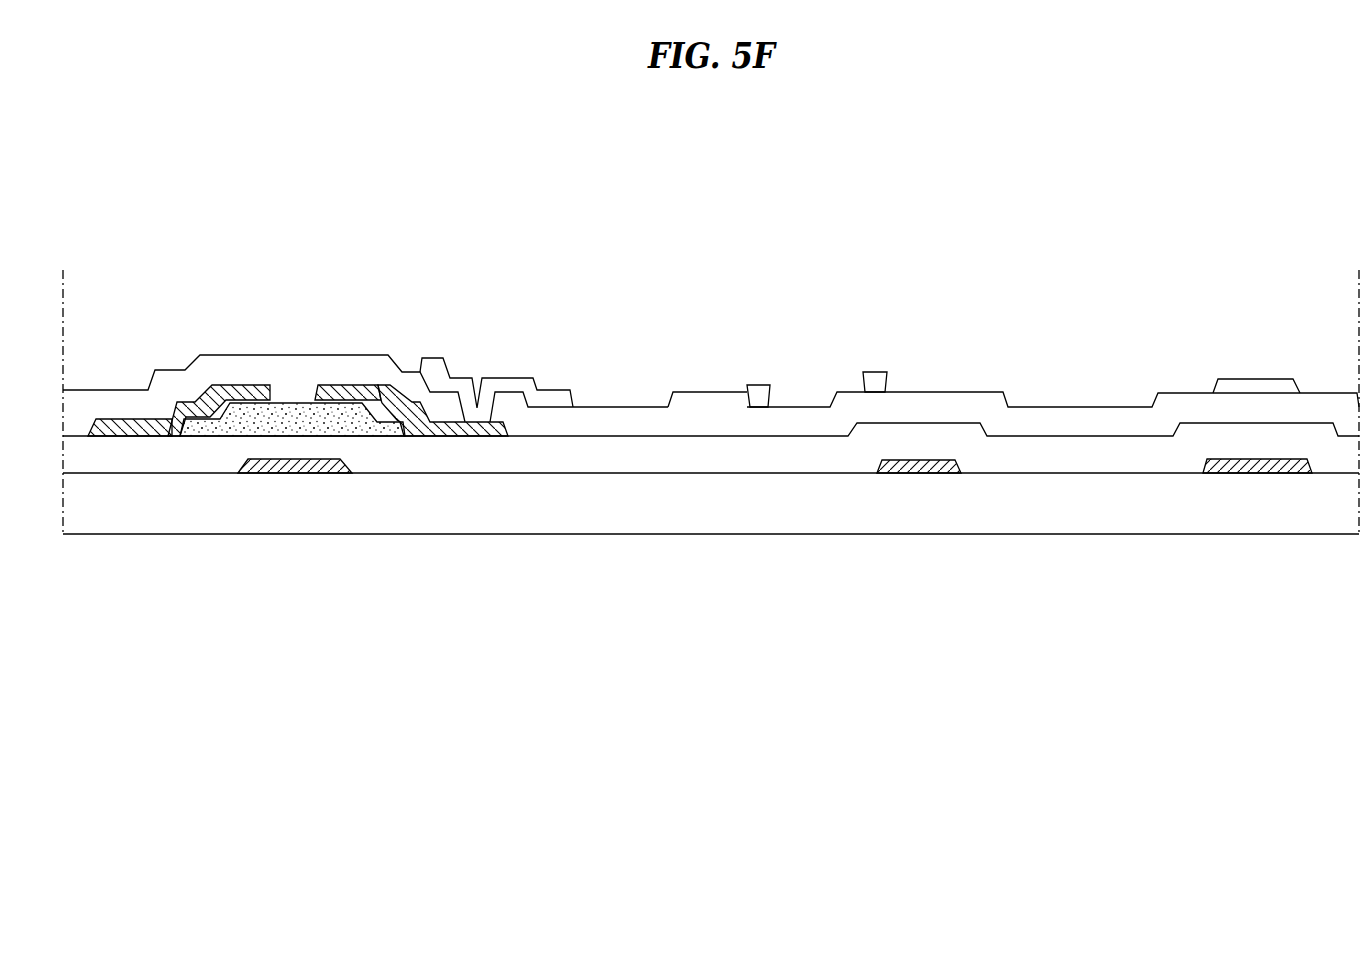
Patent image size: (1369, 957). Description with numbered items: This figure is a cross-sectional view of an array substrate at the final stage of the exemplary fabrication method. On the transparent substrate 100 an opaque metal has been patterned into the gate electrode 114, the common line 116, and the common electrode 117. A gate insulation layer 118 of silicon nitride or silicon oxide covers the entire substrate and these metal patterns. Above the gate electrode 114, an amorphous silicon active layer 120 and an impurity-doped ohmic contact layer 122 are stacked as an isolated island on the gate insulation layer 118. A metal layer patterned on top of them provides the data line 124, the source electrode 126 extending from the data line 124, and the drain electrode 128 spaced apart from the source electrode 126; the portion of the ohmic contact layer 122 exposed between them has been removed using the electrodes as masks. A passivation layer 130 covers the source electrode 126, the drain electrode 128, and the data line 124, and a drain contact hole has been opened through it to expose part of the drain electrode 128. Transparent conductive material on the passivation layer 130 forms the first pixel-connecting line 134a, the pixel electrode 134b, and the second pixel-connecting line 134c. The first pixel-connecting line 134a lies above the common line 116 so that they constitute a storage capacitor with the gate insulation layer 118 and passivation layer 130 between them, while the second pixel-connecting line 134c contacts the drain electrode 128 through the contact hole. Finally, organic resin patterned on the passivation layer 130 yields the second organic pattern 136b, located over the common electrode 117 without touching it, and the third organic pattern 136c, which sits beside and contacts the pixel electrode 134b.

The transparent substrate 100 is at (1120, 524).
The gate electrode 114 is at (291, 472).
The common line 116 is at (1235, 462).
The common electrode 117 is at (937, 467).
The gate insulation layer 118 is at (1065, 445).
The active layer 120 is at (297, 407).
The ohmic contact layer 122 is at (347, 387).
The data line 124 is at (125, 420).
The source electrode 126 is at (238, 385).
The drain electrode 128 is at (382, 393).
The passivation layer 130 is at (622, 412).
The first pixel-connecting line 134a is at (1250, 385).
The pixel electrode 134b is at (695, 398).
The second pixel-connecting line 134c is at (508, 382).
The second organic pattern 136b is at (878, 370).
The third organic pattern 136c is at (760, 387).